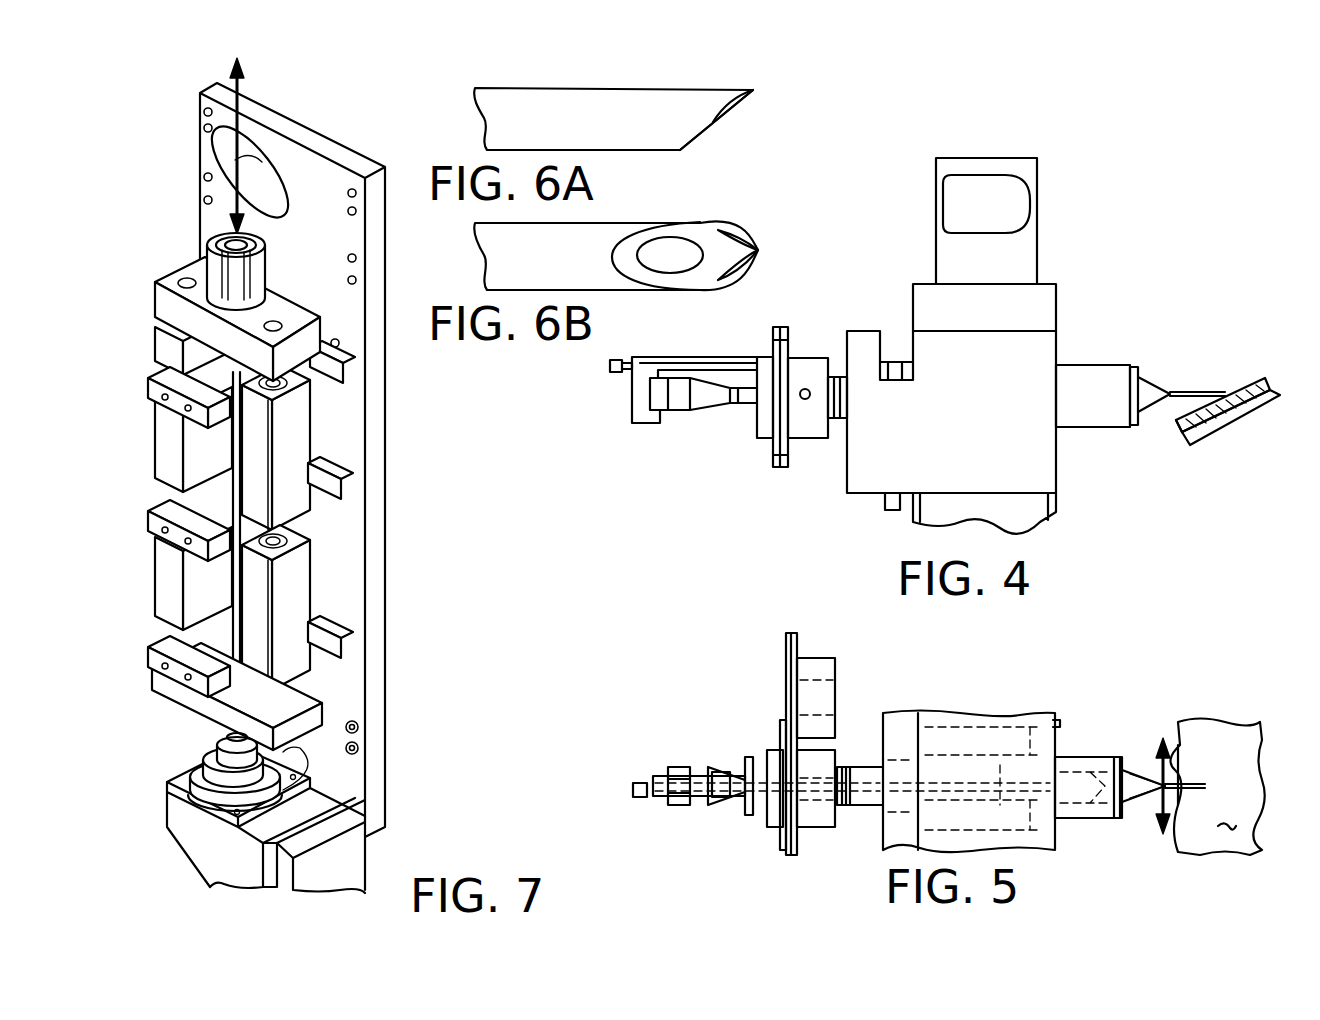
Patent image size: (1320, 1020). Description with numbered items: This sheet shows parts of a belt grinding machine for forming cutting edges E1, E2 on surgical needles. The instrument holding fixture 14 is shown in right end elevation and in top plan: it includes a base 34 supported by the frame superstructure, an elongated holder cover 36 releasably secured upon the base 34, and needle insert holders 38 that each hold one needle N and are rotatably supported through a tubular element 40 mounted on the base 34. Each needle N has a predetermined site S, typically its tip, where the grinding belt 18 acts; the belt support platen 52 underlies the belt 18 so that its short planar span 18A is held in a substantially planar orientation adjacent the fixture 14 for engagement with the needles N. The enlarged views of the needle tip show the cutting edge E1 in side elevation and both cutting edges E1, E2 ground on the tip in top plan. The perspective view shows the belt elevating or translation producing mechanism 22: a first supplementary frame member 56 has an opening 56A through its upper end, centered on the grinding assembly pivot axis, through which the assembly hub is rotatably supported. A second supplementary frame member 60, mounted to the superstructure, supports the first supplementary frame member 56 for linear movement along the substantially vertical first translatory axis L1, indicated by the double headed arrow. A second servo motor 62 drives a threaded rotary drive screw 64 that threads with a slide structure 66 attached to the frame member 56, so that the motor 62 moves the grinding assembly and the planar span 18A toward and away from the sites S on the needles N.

In FIG. 4, the instrument holding fixture 14 is at (1084, 237).
In FIG. 5, the instrument holding fixture 14 is at (893, 692).
In FIG. 4, the grinding belt 18 is at (1272, 380).
In FIG. 5, the grinding belt 18 is at (1176, 847).
In FIG. 4, the planar span 18A is at (1183, 412).
In FIG. 5, the planar span 18A is at (1226, 832).
In FIG. 7, the translation producing mechanism 22 is at (167, 266).
In FIG. 4, the base 34 is at (866, 463).
In FIG. 5, the base 34 is at (982, 712).
In FIG. 4, the holder cover 36 is at (933, 343).
In FIG. 5, the needle insert holder 38 is at (1148, 773).
In FIG. 4, the tubular element 40 is at (1082, 365).
In FIG. 5, the tubular element 40 is at (1080, 757).
In FIG. 4, the belt support platen 52 is at (1240, 422).
In FIG. 7, the first supplementary frame member 56 is at (375, 403).
In FIG. 7, the opening 56A is at (268, 176).
In FIG. 7, the second supplementary frame member 60 is at (202, 577).
In FIG. 7, the second servo motor 62 is at (357, 855).
In FIG. 7, the drive screw 64 is at (233, 736).
In FIG. 7, the slide structure 66 is at (160, 428).
In FIG. 6A, the needle N is at (628, 101).
In FIG. 6B, the needle N is at (588, 234).
In FIG. 4, the needle N is at (1184, 388).
In FIG. 5, the needle N is at (1190, 785).
In FIG. 4, the predetermined site S is at (1232, 393).
In FIG. 5, the predetermined site S is at (1205, 785).
In FIG. 6A, the cutting edge E1 is at (697, 143).
In FIG. 6B, the cutting edge E1 is at (690, 278).
In FIG. 6A, the cutting edge E2 is at (733, 108).
In FIG. 6B, the cutting edge E2 is at (738, 270).
In FIG. 7, the first translatory axis L1 is at (238, 150).